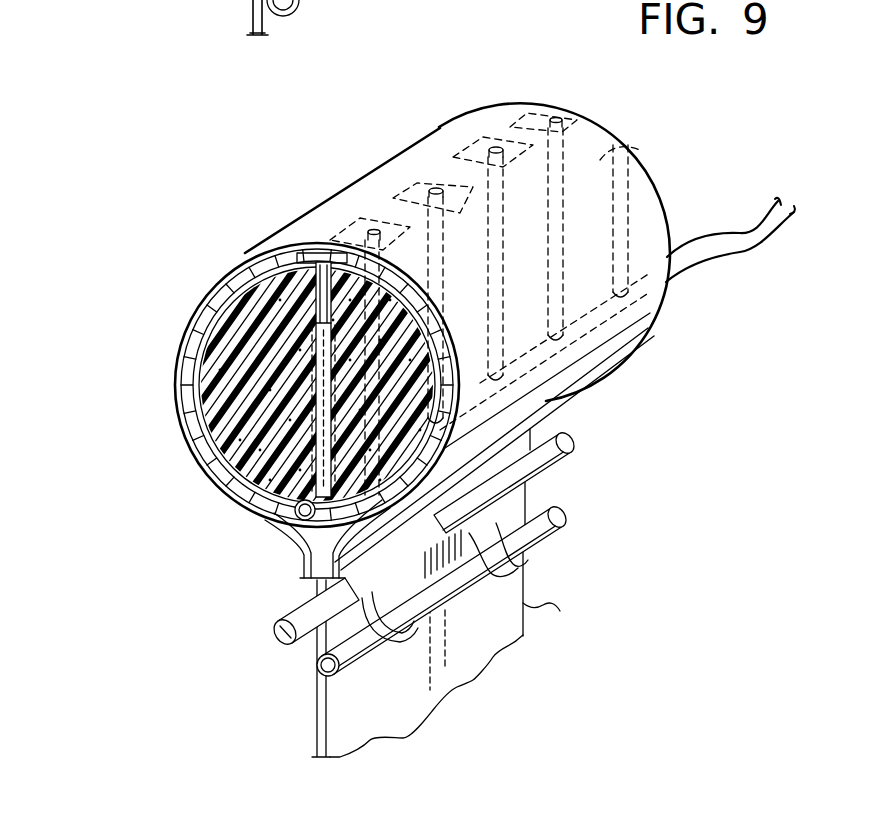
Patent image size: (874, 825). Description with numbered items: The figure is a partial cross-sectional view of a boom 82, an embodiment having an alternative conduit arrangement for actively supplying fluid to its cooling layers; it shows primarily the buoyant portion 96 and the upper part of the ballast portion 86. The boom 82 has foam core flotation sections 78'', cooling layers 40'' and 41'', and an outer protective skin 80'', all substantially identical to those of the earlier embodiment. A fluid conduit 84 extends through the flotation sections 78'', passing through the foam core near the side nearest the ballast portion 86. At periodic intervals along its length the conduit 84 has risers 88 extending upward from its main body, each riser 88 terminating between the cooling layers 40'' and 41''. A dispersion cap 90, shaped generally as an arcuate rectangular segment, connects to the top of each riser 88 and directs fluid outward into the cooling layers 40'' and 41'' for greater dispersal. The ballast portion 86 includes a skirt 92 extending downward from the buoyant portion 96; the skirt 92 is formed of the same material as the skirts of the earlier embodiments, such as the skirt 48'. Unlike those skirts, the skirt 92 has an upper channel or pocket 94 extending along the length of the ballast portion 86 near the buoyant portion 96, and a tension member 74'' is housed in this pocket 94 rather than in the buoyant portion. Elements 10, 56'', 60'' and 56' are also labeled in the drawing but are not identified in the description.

The cylindrical housing 10 is at (538, 80).
The riser 88 is at (583, 150).
The dispersion cap 90 is at (430, 195).
The boom 82 is at (182, 283).
The outer protective skin 80'' is at (300, 370).
The foam core flotation section 78'' is at (325, 385).
The buoyant portion 96 is at (123, 428).
The cooling layer 41'' is at (242, 533).
The cooling layer 40'' is at (286, 550).
The skirt 92 is at (530, 605).
The ballast portion 86 is at (272, 703).
The upper pocket 94 is at (574, 446).
The lower pipe 56'' is at (480, 589).
The pipe clamp 60'' is at (487, 582).
The tension member 74'' is at (274, 627).
The fluid conduit 84 is at (757, 232).
The skirt 48' is at (227, 18).
The pipe 56' is at (318, 9).